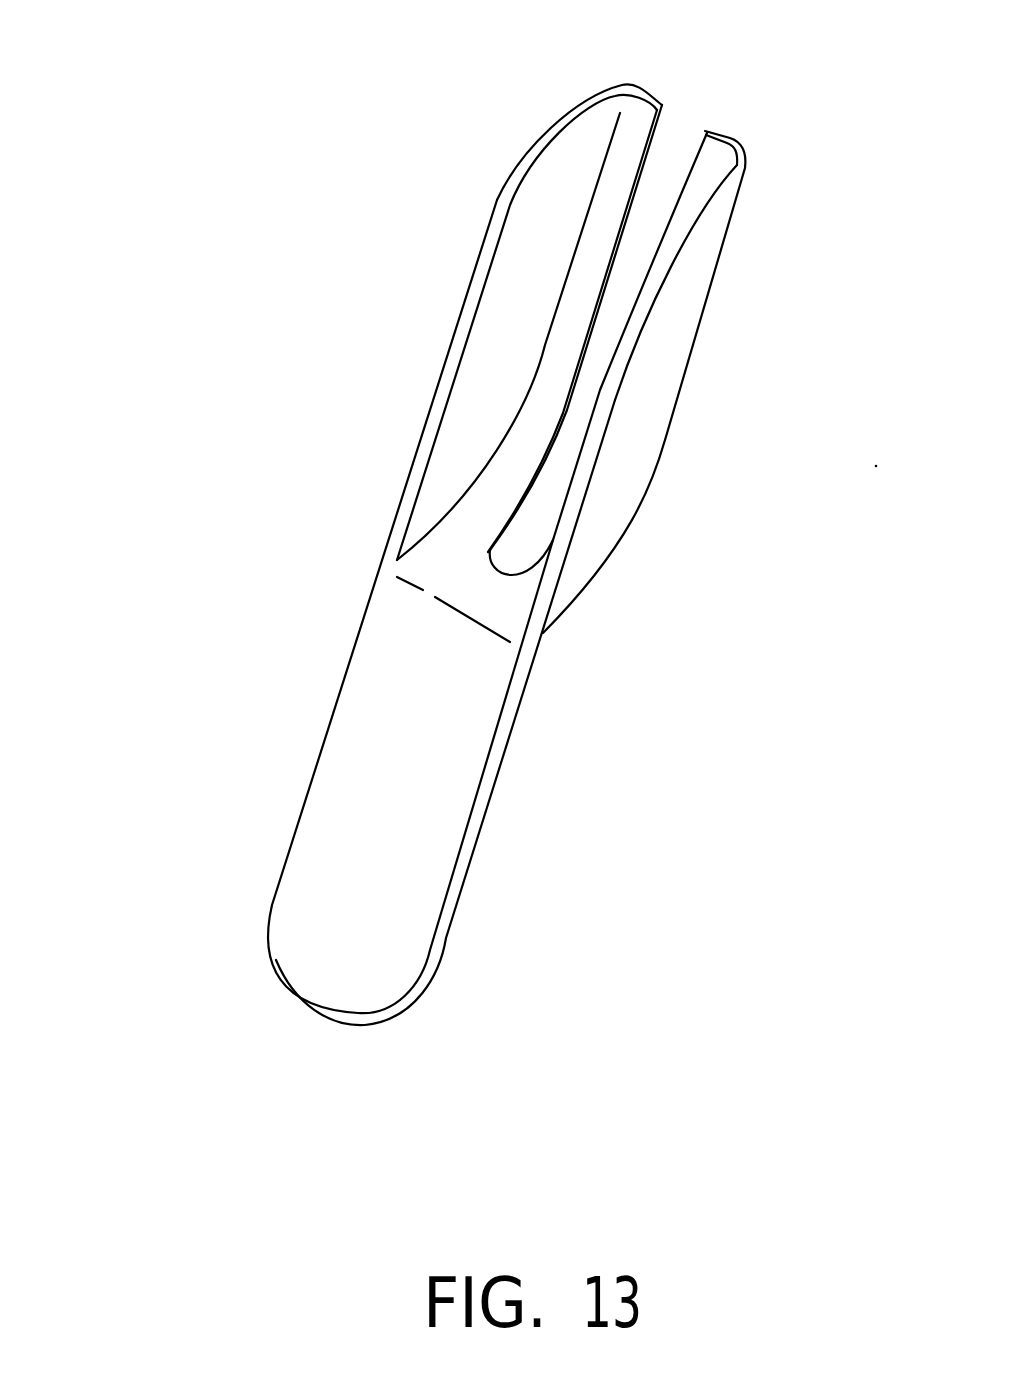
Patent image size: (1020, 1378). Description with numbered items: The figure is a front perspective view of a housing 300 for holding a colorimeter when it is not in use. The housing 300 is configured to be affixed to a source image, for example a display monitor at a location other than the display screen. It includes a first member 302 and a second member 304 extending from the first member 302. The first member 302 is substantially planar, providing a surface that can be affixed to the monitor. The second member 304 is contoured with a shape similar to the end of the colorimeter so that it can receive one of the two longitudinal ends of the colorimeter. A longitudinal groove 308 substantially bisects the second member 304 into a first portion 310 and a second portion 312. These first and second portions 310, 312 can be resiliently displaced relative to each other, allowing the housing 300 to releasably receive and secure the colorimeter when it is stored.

The housing 300 is at (478, 554).
The first member 302 is at (383, 707).
The second member 304 is at (672, 318).
The longitudinal groove 308 is at (680, 130).
The first portion 310 is at (558, 143).
The second portion 312 is at (738, 163).